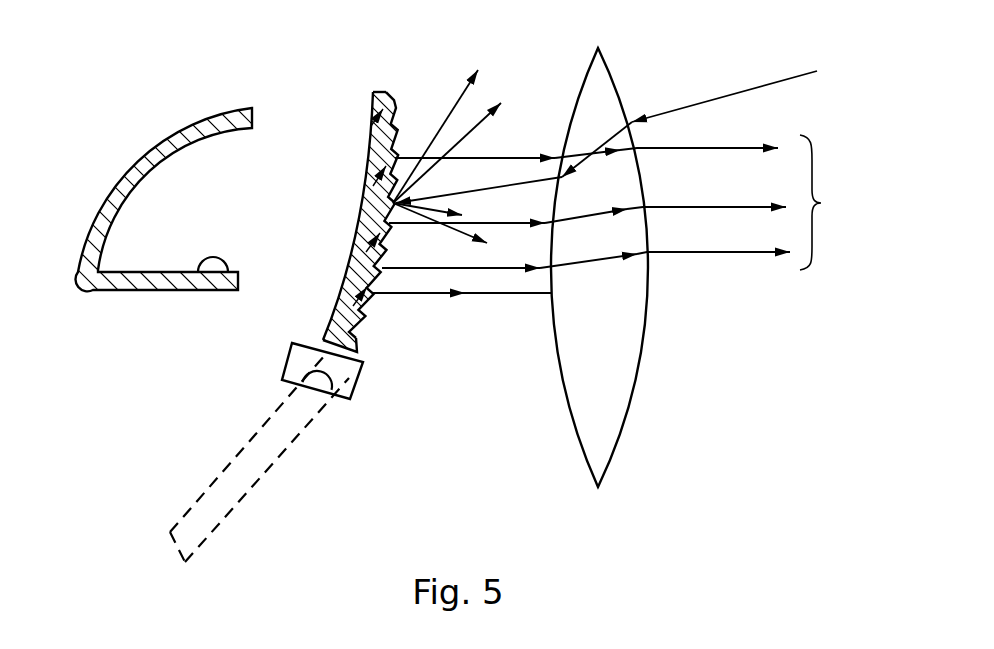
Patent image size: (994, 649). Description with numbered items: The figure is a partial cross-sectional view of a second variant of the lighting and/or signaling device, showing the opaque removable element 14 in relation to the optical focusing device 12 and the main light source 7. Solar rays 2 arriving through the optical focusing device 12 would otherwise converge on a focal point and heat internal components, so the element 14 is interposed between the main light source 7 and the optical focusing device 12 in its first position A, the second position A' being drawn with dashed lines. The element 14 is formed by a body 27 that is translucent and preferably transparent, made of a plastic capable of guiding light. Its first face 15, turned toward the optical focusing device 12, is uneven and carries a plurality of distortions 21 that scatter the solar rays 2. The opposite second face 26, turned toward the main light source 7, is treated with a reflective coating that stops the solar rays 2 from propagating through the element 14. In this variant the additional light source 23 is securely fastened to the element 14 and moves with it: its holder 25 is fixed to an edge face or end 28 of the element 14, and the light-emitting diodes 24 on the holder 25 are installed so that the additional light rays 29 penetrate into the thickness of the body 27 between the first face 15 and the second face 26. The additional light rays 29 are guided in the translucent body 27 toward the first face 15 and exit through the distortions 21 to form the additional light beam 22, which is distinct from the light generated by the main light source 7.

The solar rays 2 is at (688, 107).
The main light source 7 is at (213, 258).
The optical focusing device 12 is at (584, 314).
The opaque removable element 14 is at (378, 299).
The first face 15 is at (396, 103).
The distortions 21 is at (399, 134).
The additional light beam 22 is at (700, 202).
The additional light source 23 is at (278, 359).
The light-emitting diodes 24 is at (317, 384).
The holder 25 is at (347, 380).
The second face 26 is at (368, 148).
The body 27 is at (372, 95).
The edge face or end 28 is at (323, 343).
The additional light rays 29 is at (697, 149).